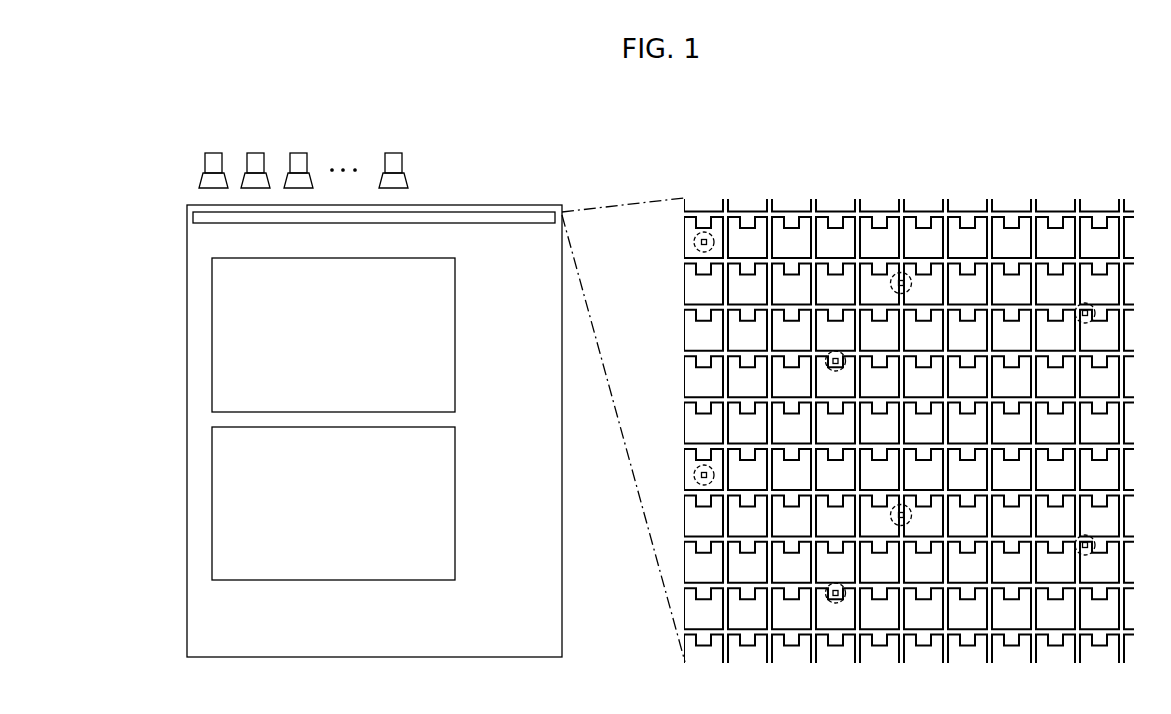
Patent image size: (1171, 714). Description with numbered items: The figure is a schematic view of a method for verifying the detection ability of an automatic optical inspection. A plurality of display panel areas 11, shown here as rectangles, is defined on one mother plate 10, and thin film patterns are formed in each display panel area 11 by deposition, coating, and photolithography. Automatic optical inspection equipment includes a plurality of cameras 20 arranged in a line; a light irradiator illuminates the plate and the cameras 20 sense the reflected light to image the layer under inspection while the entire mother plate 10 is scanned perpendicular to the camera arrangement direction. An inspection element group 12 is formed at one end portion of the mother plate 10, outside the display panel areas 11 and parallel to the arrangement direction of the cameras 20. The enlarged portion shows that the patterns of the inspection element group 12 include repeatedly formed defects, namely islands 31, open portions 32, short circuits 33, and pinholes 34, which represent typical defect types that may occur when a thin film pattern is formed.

The mother plate 10 is at (368, 658).
The display panel area 11 is at (457, 500).
The inspection element group 12 is at (508, 213).
The cameras 20 is at (394, 153).
The island 31 is at (694, 243).
The open portion 32 is at (893, 277).
The short circuit 33 is at (1093, 317).
The pinhole 34 is at (826, 362).